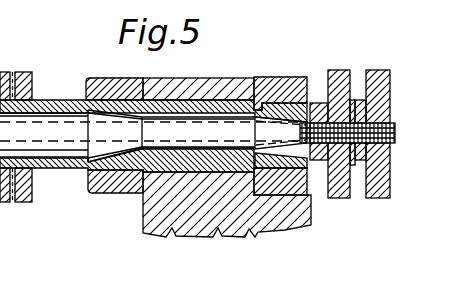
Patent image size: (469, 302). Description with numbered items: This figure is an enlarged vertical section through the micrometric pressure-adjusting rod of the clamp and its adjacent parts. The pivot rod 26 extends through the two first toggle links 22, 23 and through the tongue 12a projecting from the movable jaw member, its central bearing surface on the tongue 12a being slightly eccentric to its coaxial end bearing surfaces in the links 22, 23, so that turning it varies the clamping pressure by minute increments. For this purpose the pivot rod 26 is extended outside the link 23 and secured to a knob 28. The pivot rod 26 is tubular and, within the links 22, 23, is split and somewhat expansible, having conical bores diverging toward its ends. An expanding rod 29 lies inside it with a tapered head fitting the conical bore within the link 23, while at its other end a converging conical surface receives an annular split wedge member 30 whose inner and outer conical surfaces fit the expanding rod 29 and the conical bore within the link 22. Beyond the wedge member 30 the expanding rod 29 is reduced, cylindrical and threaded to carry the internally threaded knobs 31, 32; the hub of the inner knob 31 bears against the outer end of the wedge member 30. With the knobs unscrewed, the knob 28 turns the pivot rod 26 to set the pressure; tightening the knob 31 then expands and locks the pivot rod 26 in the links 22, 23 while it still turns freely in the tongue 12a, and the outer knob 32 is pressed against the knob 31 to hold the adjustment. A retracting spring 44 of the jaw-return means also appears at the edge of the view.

The knob 28 is at (26, 72).
The pivot rod 26 is at (67, 170).
The first link 23 is at (126, 78).
The tongue 12a is at (183, 78).
The first link 22 is at (298, 78).
The expanding rod 29 is at (177, 143).
The wedge member 30 is at (313, 107).
The inner knob 31 is at (340, 70).
The outer knob 32 is at (375, 70).
The retracting spring 44 is at (10, 243).